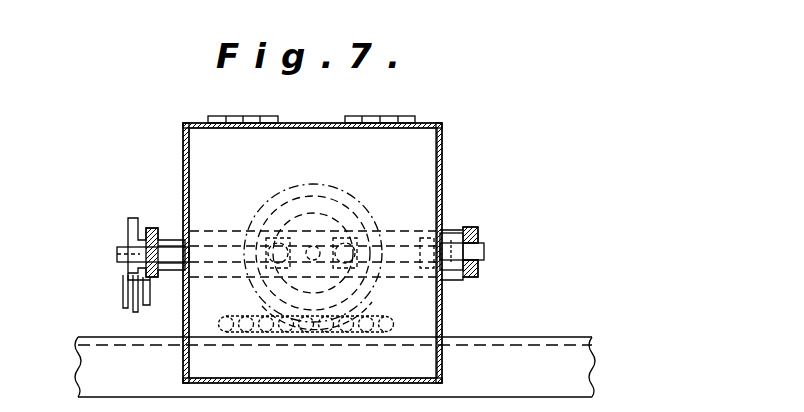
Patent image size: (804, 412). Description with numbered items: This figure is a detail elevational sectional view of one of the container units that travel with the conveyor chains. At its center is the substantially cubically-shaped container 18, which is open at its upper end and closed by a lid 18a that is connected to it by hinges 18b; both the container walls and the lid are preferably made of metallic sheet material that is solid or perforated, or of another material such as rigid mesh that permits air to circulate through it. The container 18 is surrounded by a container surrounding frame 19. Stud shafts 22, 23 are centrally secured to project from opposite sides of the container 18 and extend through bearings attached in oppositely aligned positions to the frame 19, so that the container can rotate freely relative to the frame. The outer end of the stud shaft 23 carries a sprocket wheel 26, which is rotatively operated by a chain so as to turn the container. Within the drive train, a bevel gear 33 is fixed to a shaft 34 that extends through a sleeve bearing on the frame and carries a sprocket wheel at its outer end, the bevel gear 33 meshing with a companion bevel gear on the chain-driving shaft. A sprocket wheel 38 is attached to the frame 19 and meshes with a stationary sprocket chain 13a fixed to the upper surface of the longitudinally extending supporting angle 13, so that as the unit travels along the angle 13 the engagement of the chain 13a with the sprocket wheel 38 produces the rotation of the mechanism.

The container 18 is at (236, 162).
The lid 18a is at (333, 100).
The hinges 18b is at (254, 100).
The sprocket wheel 26 is at (128, 222).
The stud shaft 23 is at (117, 253).
The container surrounding frame 19 is at (450, 232).
The stud shaft 22 is at (484, 250).
The bevel gear 33 is at (288, 283).
The shaft 34 is at (316, 246).
The sprocket wheel 38 is at (370, 293).
The sprocket chain 13a is at (404, 322).
The supporting angle 13 is at (560, 364).